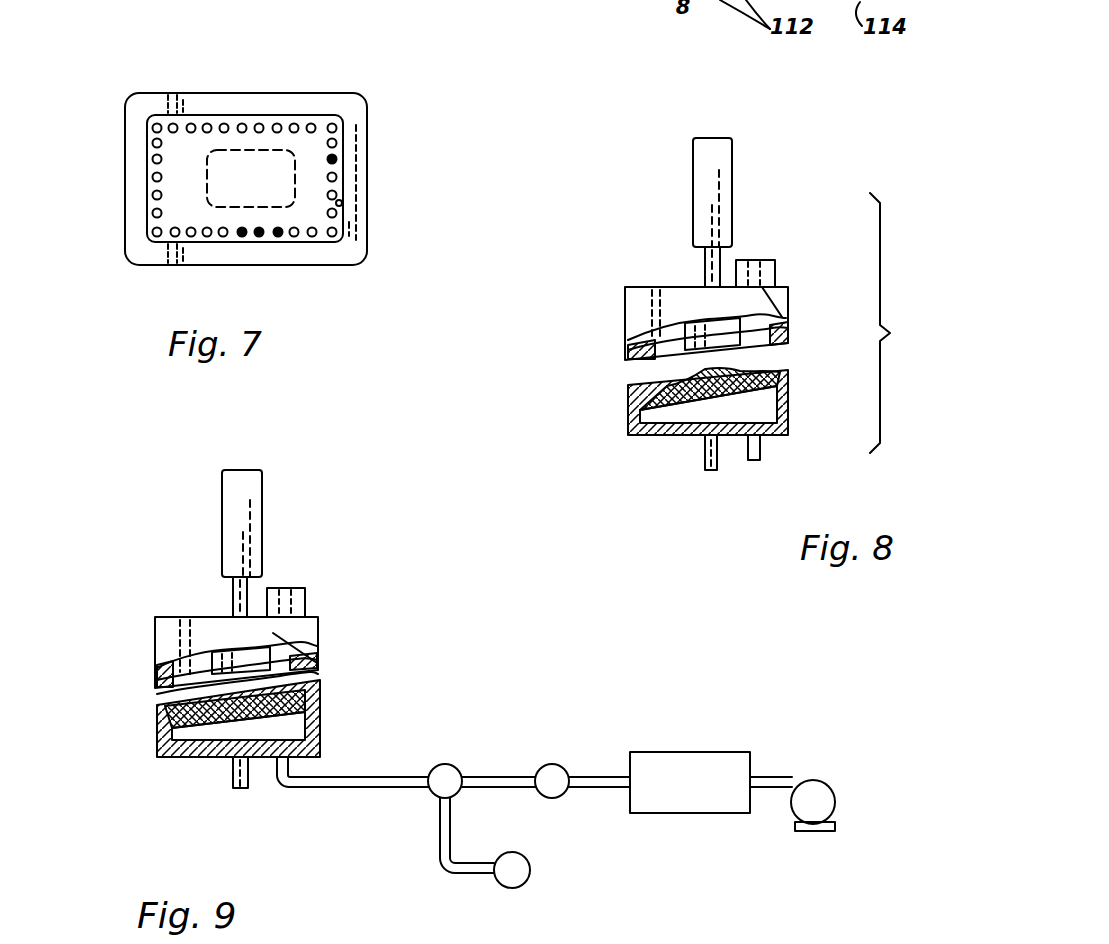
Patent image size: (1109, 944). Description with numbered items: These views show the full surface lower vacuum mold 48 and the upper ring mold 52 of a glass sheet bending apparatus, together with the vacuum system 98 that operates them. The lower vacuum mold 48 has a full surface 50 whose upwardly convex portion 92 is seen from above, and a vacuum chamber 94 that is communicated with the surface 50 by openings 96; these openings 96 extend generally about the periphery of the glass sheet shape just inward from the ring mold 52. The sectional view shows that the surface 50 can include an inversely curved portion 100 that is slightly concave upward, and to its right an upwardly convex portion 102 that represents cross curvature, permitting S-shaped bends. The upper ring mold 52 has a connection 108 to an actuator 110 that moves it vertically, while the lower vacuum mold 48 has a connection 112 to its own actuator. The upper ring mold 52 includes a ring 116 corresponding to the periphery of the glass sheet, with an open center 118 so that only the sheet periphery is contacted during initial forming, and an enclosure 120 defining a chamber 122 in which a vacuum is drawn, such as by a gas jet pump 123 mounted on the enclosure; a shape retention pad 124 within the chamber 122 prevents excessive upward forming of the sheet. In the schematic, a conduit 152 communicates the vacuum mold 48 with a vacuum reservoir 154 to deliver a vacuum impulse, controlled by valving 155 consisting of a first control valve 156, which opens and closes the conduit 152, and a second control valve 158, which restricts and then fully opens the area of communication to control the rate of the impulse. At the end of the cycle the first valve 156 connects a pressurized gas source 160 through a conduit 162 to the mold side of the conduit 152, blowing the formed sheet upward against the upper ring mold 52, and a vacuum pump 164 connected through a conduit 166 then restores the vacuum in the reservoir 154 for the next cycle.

In FIG. 7, the lower vacuum mold 48 is at (306, 116).
In FIG. 8, the lower vacuum mold 48 is at (618, 442).
In FIG. 9, the lower vacuum mold 48 is at (145, 755).
In FIG. 7, the full surface 50 is at (167, 153).
In FIG. 8, the full surface 50 is at (710, 372).
In FIG. 9, the full surface 50 is at (308, 722).
In FIG. 7, the upper ring mold 52 is at (364, 126).
In FIG. 8, the upper ring mold 52 is at (619, 284).
In FIG. 9, the upper ring mold 52 is at (150, 608).
In FIG. 7, the upwardly convex portion 92 is at (197, 125).
In FIG. 8, the vacuum chamber 94 is at (652, 437).
In FIG. 9, the vacuum chamber 94 is at (188, 757).
In FIG. 7, the openings 96 is at (278, 238).
In FIG. 8, the openings 96 is at (648, 403).
In FIG. 9, the openings 96 is at (305, 692).
In FIG. 9, the vacuum system 98 is at (552, 720).
In FIG. 8, the inversely curved portion 100 is at (674, 385).
In FIG. 9, the inversely curved portion 100 is at (176, 688).
In FIG. 8, the upwardly convex portion 102 is at (755, 368).
In FIG. 9, the upwardly convex portion 102 is at (318, 672).
In FIG. 8, the connection 108 is at (705, 258).
In FIG. 9, the connection 108 is at (248, 588).
In FIG. 8, the actuator 110 is at (723, 171).
In FIG. 9, the actuator 110 is at (253, 495).
In FIG. 8, the connection 112 is at (715, 470).
In FIG. 9, the connection 112 is at (250, 776).
In FIG. 7, the ring 116 is at (356, 158).
In FIG. 8, the ring 116 is at (632, 352).
In FIG. 9, the ring 116 is at (166, 676).
In FIG. 7, the open center 118 is at (342, 204).
In FIG. 8, the open center 118 is at (652, 326).
In FIG. 9, the open center 118 is at (205, 655).
In FIG. 9, the enclosure 120 is at (153, 632).
In FIG. 8, the chamber 122 is at (660, 322).
In FIG. 9, the chamber 122 is at (190, 656).
In FIG. 8, the gas jet pump 123 is at (760, 262).
In FIG. 9, the gas jet pump 123 is at (305, 598).
In FIG. 7, the shape retention pad 124 is at (231, 150).
In FIG. 8, the shape retention pad 124 is at (727, 292).
In FIG. 9, the shape retention pad 124 is at (268, 652).
In FIG. 8, the conduit 152 is at (762, 456).
In FIG. 9, the conduit 152 is at (381, 775).
In FIG. 9, the vacuum reservoir 154 is at (672, 752).
In FIG. 9, the valving 155 is at (502, 733).
In FIG. 9, the first control valve 156 is at (441, 765).
In FIG. 9, the second control valve 158 is at (563, 768).
In FIG. 9, the pressurized gas source 160 is at (530, 878).
In FIG. 9, the conduit 162 is at (440, 832).
In FIG. 9, the vacuum pump 164 is at (822, 782).
In FIG. 9, the conduit 166 is at (770, 790).